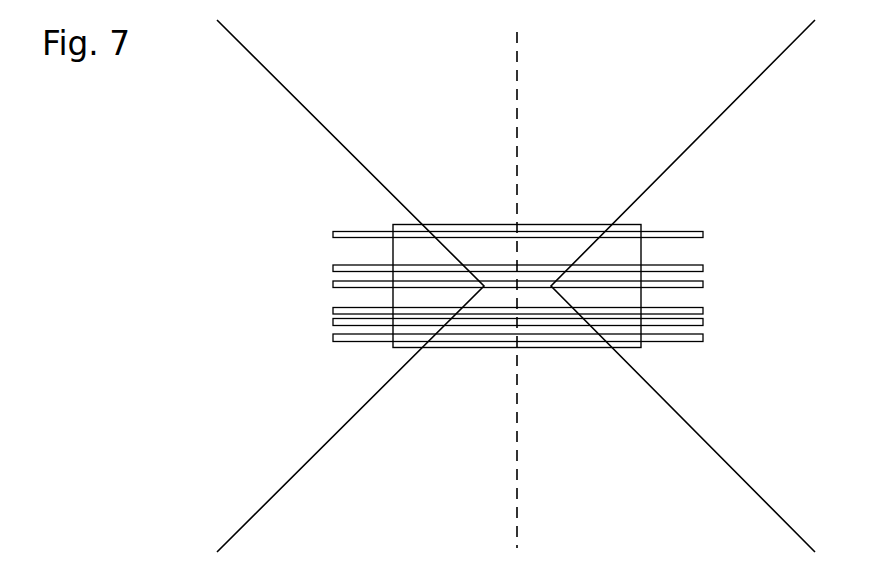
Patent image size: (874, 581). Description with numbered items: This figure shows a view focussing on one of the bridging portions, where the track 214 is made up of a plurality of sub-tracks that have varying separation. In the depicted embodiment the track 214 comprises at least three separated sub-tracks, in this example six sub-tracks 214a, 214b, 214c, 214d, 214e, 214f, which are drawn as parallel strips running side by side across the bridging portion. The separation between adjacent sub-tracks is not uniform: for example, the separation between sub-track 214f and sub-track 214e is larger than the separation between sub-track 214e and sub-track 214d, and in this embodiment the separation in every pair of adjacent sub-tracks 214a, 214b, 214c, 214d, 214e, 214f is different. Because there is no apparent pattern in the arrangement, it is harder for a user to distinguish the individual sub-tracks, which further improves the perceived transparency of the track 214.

The track 214 is at (200, 167).
The sub-track 214a is at (333, 341).
The sub-track 214b is at (334, 322).
The sub-track 214c is at (333, 316).
The sub-track 214d is at (333, 284).
The sub-track 214e is at (333, 267).
The sub-track 214f is at (333, 235).